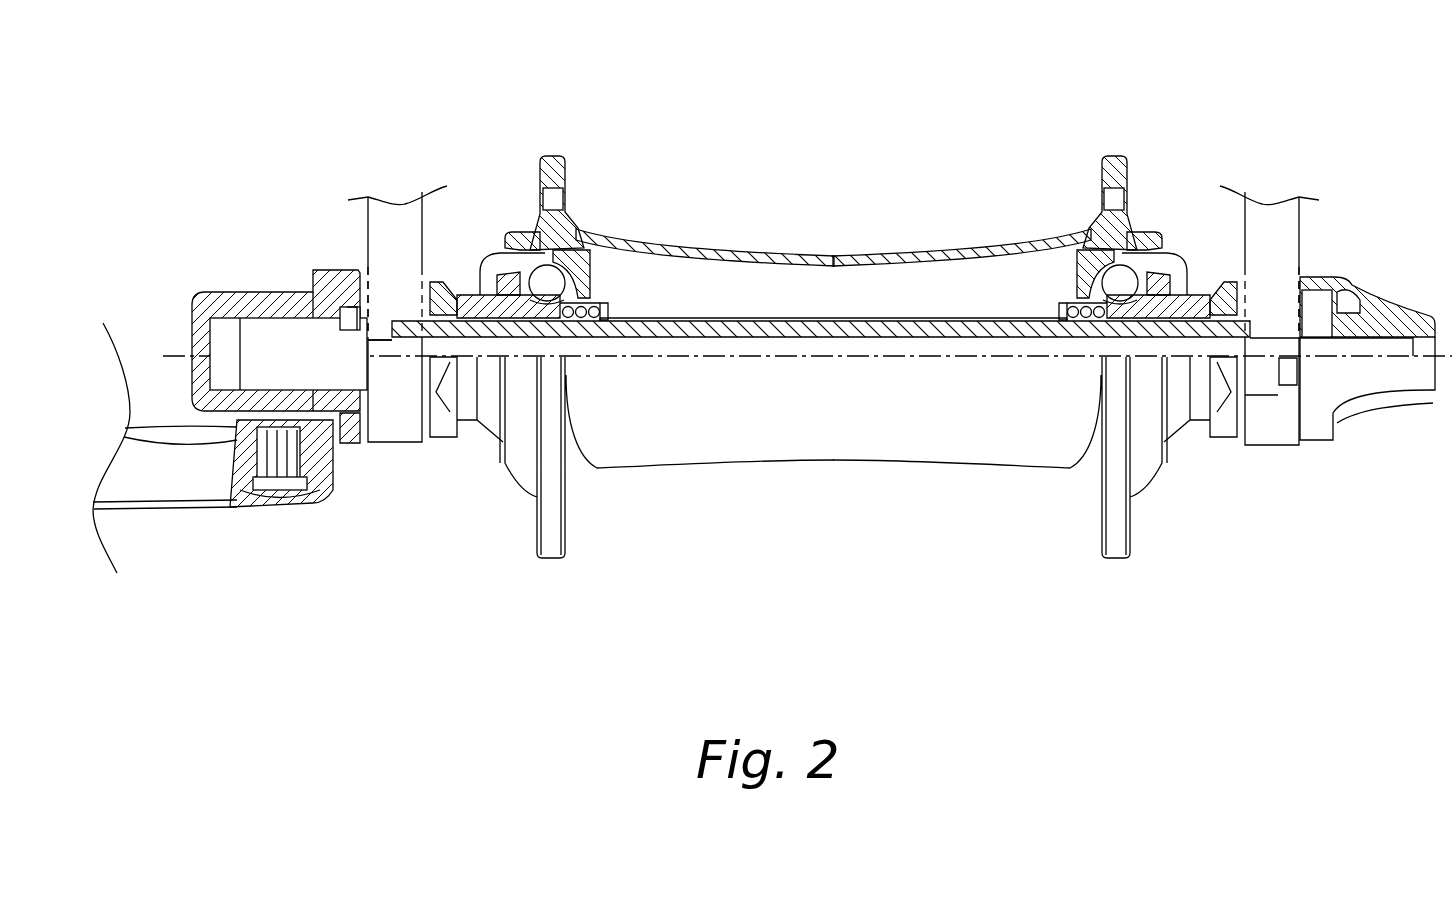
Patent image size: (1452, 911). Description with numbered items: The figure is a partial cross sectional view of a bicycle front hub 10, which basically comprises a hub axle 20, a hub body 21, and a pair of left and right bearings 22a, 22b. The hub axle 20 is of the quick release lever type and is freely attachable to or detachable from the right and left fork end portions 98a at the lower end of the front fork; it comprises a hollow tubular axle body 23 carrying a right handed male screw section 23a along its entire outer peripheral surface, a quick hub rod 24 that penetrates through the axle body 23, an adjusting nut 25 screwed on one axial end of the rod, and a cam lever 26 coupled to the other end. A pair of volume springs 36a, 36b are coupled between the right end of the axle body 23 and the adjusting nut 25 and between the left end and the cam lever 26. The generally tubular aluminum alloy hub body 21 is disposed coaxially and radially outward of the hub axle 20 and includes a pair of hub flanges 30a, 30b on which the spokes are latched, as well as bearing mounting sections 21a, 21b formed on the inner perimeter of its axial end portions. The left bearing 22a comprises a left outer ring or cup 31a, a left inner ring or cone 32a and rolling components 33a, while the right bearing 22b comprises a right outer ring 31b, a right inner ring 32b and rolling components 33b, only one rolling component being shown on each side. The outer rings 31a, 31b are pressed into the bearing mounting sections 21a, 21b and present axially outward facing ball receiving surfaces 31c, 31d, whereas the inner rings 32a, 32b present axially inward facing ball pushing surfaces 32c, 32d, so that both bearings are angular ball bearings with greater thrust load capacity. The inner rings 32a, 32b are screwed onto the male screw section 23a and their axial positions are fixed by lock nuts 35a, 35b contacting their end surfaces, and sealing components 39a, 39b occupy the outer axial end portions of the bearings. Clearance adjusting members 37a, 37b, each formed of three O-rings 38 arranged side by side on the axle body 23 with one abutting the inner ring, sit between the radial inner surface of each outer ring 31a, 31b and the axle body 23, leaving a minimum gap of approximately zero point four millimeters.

The front hub 10 is at (880, 175).
The hub axle 20 is at (772, 290).
The hub body 21 is at (748, 242).
The bearing mounting section 21a is at (520, 248).
The bearing mounting section 21b is at (1135, 240).
The left bearing 22a is at (770, 102).
The right bearing 22b is at (1092, 135).
The axle body 23 is at (826, 316).
The male screw section 23a is at (893, 316).
The quick hub rod 24 is at (332, 345).
The adjusting nut 25 is at (1352, 410).
The cam lever 26 is at (327, 470).
The hub flange 30a is at (550, 155).
The hub flange 30b is at (1127, 158).
The left outer ring 31a is at (562, 258).
The right outer ring 31b is at (1105, 258).
The ball receiving surface 31c is at (528, 300).
The ball receiving surface 31d is at (1262, 204).
The left inner ring 32a is at (540, 262).
The right inner ring 32b is at (1078, 282).
The ball pushing surface 32c is at (592, 292).
The ball pushing surface 32d is at (1097, 245).
The rolling components 33a is at (550, 283).
The rolling components 33b is at (1118, 283).
The lock nut 35a is at (368, 245).
The lock nut 35b is at (1253, 205).
The volume spring 36a is at (360, 437).
The volume spring 36b is at (1278, 395).
The clearance adjusting member 37a is at (612, 311).
The clearance adjusting member 37b is at (1055, 302).
The O-rings 38 is at (593, 337).
The sealing component 39a is at (505, 280).
The sealing component 39b is at (1147, 272).
The fork end portions 98a is at (368, 273).